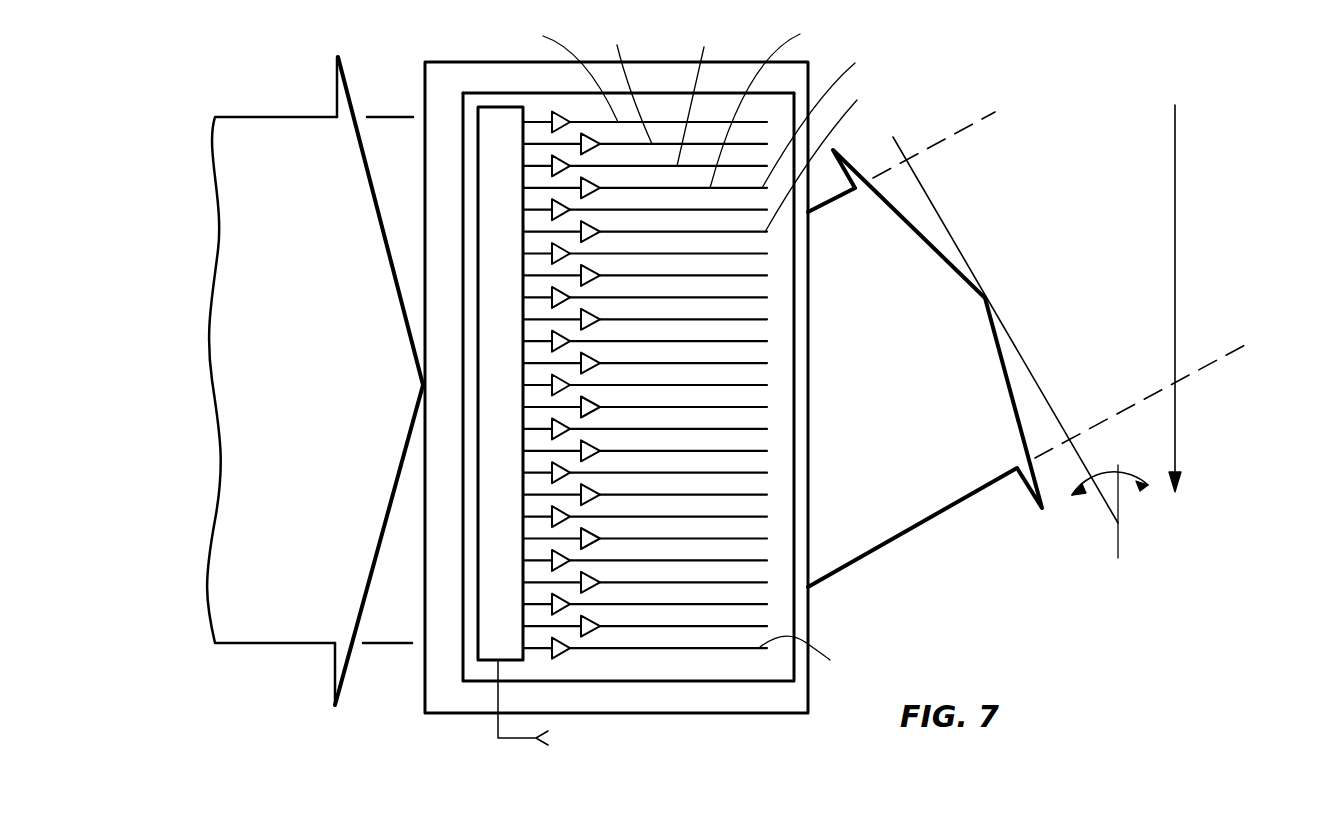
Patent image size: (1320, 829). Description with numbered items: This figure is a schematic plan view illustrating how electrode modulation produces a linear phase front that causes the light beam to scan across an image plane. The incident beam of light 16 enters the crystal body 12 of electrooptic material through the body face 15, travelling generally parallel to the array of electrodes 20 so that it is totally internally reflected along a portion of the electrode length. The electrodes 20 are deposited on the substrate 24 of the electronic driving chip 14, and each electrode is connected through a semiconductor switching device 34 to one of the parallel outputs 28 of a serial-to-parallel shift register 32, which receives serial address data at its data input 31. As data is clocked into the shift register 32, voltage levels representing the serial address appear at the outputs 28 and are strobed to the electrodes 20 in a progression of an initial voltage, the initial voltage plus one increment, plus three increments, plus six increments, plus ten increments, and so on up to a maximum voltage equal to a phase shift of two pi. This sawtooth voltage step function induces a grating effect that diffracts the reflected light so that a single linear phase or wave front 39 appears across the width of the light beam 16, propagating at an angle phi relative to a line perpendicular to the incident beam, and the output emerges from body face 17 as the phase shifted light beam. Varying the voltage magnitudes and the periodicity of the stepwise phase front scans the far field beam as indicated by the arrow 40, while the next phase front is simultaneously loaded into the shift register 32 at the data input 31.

The crystal body 12 is at (435, 70).
The electronic driving chip 14 is at (718, 686).
The body face 15 is at (418, 672).
The incident beam of light 16 is at (262, 117).
The body face 17 is at (810, 603).
The electrodes 20 is at (748, 167).
The substrate 24 is at (524, 100).
The outputs 28 is at (530, 652).
The data input 31 is at (534, 706).
The shift register 32 is at (490, 488).
The semiconductor switching device 34 is at (557, 118).
The phase front 39 is at (1050, 402).
The arrow 40 is at (1177, 293).